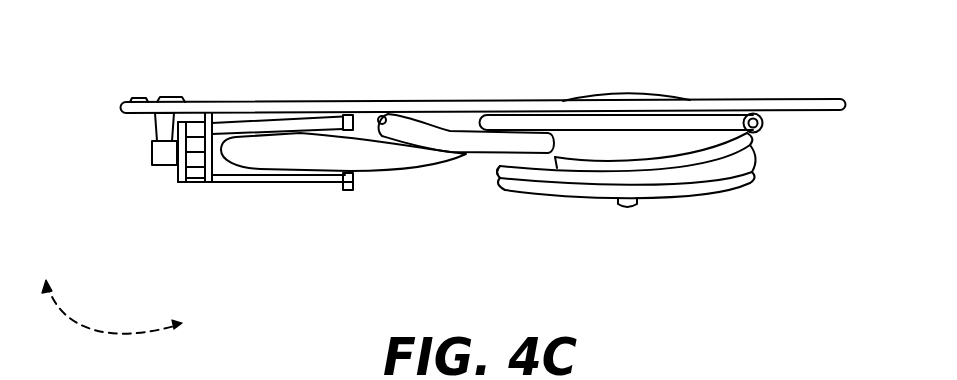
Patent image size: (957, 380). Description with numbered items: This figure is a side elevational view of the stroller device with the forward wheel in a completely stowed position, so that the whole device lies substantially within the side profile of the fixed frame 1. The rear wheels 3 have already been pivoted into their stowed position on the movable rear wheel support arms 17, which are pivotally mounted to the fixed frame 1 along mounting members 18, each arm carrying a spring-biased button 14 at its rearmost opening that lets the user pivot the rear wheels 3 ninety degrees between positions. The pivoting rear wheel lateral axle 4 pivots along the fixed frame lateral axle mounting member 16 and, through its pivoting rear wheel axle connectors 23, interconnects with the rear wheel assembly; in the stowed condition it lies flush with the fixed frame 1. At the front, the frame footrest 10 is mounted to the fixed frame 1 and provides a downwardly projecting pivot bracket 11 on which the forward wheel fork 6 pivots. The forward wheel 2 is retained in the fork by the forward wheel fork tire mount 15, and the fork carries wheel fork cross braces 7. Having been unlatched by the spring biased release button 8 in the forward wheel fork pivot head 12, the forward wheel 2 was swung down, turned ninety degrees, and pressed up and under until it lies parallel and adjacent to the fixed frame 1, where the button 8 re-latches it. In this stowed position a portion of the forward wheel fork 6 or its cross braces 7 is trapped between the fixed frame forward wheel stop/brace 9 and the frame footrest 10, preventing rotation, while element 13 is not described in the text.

The fixed frame 1 is at (365, 100).
The forward wheel 2 is at (402, 174).
The rear wheels 3 is at (745, 147).
The pivoting rear wheel lateral axle 4 is at (713, 115).
The forward wheel fork 6 is at (242, 182).
The wheel fork cross braces 7 is at (180, 182).
The spring biased release button 8 is at (152, 152).
The fixed frame forward wheel stop/brace 9 is at (130, 100).
The frame footrest 10 is at (170, 98).
The downwardly projecting pivot bracket 11 is at (157, 125).
The forward wheel fork pivot head 12 is at (163, 170).
The column guide 13 is at (155, 172).
The spring-biased button 14 is at (560, 157).
The forward wheel fork tire mount 15 is at (353, 190).
The fixed frame lateral axle mounting member 16 is at (503, 112).
The movable rear wheel support arm 17 is at (500, 166).
The mounting members 18 is at (385, 112).
The pivoting rear wheel axle connectors 23 is at (765, 121).